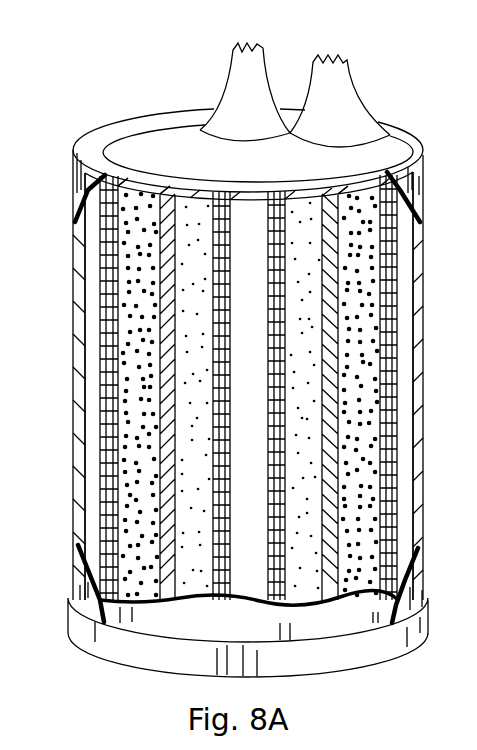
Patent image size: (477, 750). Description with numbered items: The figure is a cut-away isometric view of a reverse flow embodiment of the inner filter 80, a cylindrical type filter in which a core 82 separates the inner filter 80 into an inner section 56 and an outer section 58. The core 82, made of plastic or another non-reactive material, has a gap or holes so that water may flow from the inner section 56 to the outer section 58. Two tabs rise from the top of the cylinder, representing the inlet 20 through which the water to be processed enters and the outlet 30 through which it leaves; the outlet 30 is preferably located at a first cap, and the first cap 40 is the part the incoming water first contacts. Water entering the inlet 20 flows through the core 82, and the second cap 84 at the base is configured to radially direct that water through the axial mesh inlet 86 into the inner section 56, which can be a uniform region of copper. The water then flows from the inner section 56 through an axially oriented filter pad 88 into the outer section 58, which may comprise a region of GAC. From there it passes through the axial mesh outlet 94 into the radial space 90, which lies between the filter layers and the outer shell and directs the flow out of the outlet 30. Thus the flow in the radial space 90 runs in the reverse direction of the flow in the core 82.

The inner filter 80 is at (170, 66).
The inlet 20 is at (253, 70).
The outlet 30 is at (337, 80).
The first cap 40 is at (385, 148).
The axial mesh inlet 86 is at (136, 212).
The axially oriented filter pad 88 is at (170, 278).
The radial space 90 is at (97, 331).
The axial mesh outlet 94 is at (118, 390).
The outer section 58 is at (140, 445).
The inner section 56 is at (195, 492).
The core 82 is at (245, 548).
The second cap 84 is at (310, 615).